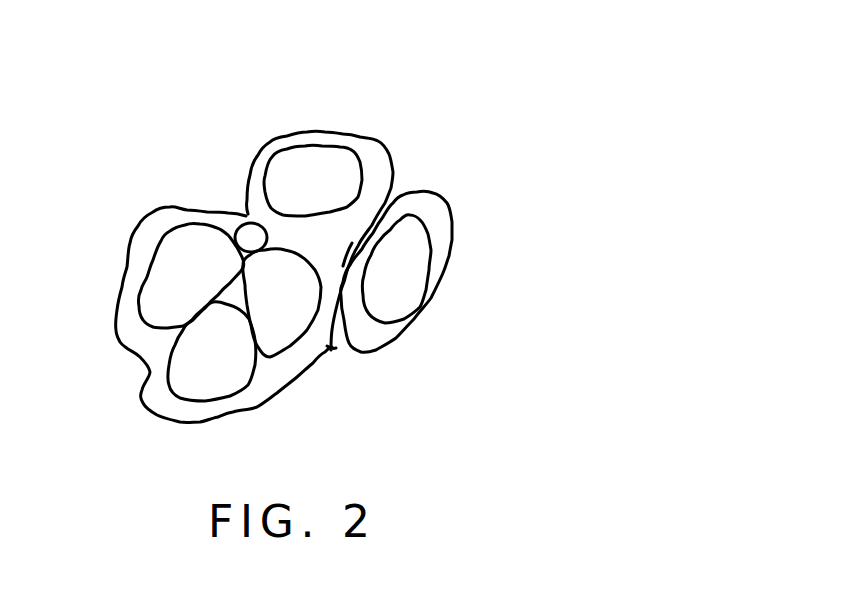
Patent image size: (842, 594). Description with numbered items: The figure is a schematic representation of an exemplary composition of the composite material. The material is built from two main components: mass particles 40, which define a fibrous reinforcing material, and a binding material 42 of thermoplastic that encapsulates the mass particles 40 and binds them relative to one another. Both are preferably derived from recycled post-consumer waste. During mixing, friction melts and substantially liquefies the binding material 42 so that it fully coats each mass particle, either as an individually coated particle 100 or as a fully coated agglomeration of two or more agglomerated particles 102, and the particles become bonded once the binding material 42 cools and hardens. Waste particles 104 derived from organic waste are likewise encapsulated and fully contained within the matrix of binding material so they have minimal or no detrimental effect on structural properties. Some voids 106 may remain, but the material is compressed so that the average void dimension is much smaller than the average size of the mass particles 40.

The mass particles 40 is at (307, 199).
The binding material 42 is at (385, 173).
The individual particle 100 is at (333, 163).
The agglomerated particles 102 is at (150, 317).
The waste particles 104 is at (247, 236).
The voids 106 is at (334, 347).